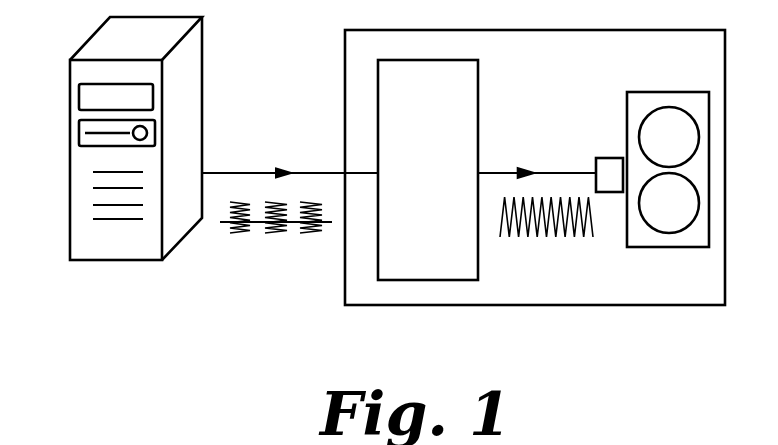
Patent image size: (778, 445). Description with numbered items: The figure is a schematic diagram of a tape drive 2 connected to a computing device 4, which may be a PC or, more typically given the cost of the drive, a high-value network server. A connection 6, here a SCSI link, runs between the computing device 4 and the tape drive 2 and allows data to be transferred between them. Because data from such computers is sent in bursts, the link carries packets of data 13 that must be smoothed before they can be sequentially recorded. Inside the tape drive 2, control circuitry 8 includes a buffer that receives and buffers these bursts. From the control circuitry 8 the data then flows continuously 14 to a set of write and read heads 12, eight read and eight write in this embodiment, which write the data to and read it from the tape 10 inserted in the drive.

The tape drive 2 is at (726, 135).
The computing device 4 is at (76, 85).
The connection 6 is at (270, 172).
The control circuitry 8 is at (413, 159).
The tape 10 is at (700, 207).
The write and read heads 12 is at (606, 157).
The packets of data 13 is at (307, 240).
The continuously written data 14 is at (515, 243).